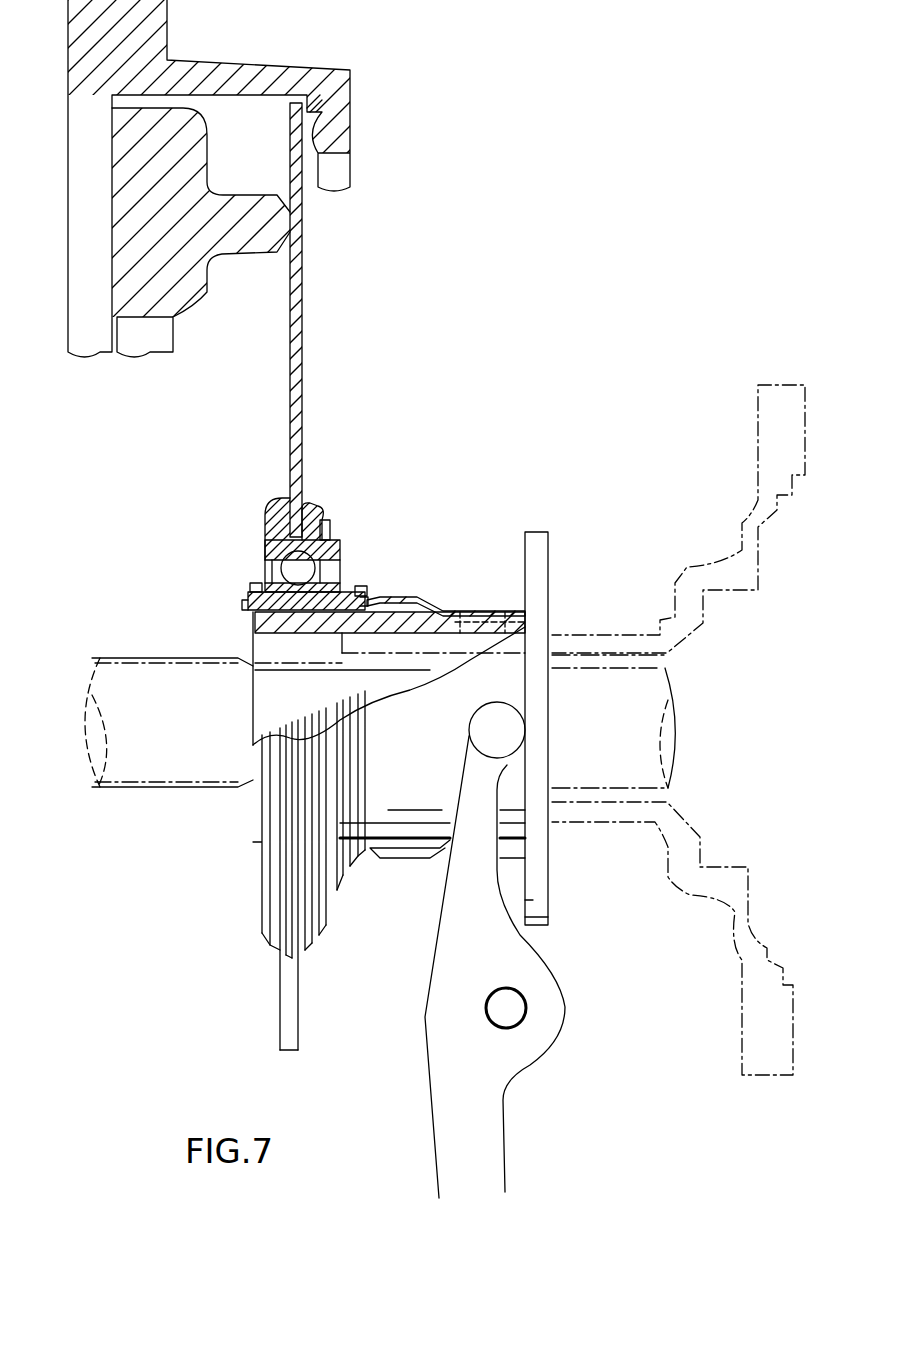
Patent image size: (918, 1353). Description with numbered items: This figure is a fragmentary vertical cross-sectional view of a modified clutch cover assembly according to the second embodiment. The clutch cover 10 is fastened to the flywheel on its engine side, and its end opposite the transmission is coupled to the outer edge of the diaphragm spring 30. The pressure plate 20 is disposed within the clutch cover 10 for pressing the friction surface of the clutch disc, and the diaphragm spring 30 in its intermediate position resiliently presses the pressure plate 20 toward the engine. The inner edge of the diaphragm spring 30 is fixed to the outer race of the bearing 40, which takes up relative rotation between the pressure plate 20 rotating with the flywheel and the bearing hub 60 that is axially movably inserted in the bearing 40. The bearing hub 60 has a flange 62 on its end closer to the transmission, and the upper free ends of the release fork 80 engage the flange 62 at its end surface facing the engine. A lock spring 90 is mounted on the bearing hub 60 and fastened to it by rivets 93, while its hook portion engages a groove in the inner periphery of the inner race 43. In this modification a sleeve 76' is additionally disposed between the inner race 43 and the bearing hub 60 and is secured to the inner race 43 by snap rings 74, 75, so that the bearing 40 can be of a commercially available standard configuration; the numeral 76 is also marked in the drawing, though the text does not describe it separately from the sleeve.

The clutch cover 10 is at (318, 78).
The pressure plate 20 is at (200, 290).
The diaphragm spring 30 is at (302, 360).
The bearing 40 is at (257, 562).
The inner race 43 is at (348, 586).
The bearing hub 60 is at (393, 777).
The flange 62 is at (552, 540).
The snap ring 74 is at (257, 583).
The snap ring 75 is at (360, 588).
The spring washer 76 is at (393, 563).
The sleeve 76' is at (182, 615).
The release fork 80 is at (428, 1040).
The lock spring 90 is at (425, 588).
The rivet 93 is at (505, 612).